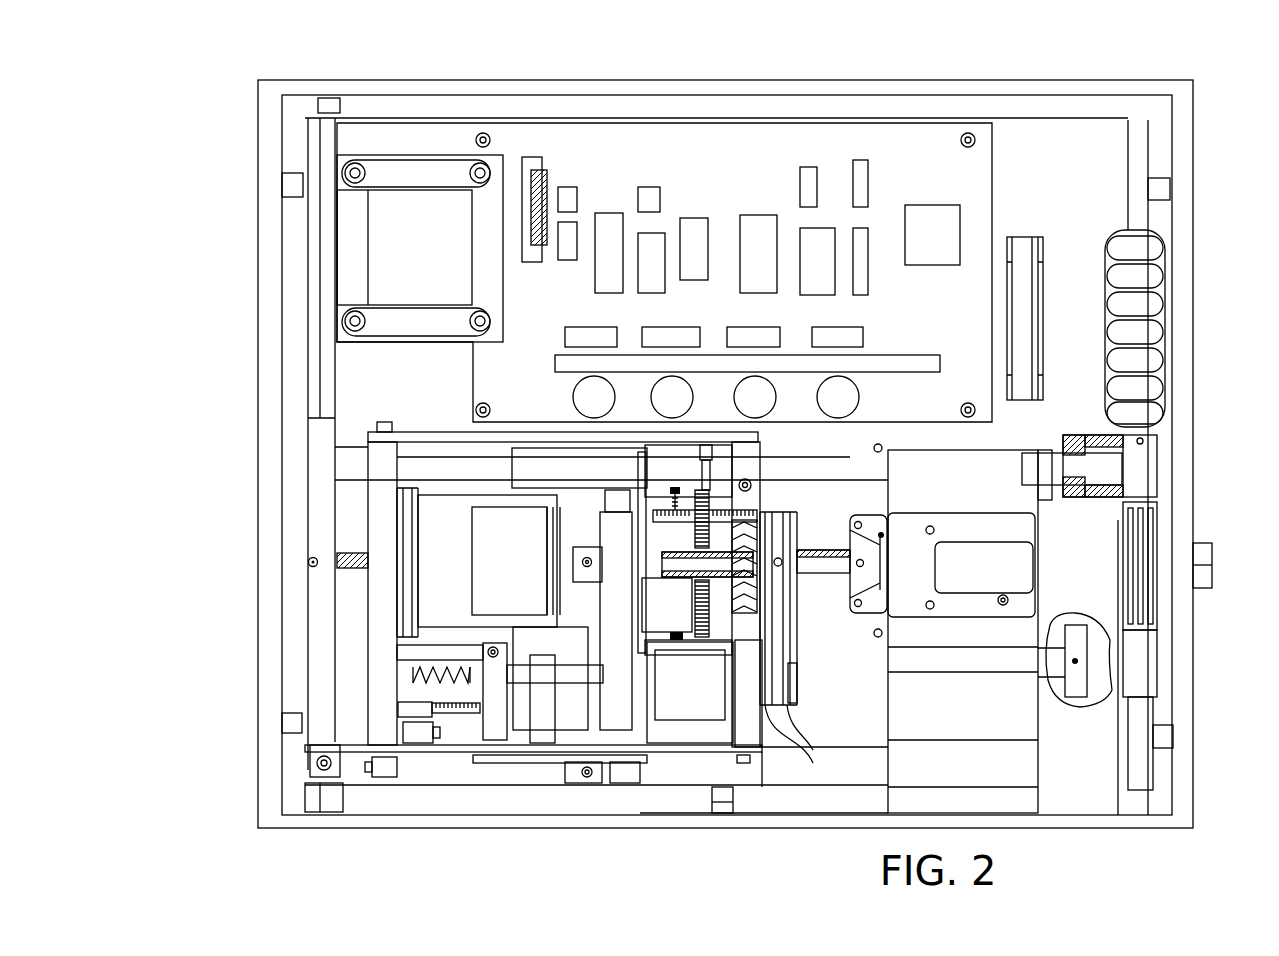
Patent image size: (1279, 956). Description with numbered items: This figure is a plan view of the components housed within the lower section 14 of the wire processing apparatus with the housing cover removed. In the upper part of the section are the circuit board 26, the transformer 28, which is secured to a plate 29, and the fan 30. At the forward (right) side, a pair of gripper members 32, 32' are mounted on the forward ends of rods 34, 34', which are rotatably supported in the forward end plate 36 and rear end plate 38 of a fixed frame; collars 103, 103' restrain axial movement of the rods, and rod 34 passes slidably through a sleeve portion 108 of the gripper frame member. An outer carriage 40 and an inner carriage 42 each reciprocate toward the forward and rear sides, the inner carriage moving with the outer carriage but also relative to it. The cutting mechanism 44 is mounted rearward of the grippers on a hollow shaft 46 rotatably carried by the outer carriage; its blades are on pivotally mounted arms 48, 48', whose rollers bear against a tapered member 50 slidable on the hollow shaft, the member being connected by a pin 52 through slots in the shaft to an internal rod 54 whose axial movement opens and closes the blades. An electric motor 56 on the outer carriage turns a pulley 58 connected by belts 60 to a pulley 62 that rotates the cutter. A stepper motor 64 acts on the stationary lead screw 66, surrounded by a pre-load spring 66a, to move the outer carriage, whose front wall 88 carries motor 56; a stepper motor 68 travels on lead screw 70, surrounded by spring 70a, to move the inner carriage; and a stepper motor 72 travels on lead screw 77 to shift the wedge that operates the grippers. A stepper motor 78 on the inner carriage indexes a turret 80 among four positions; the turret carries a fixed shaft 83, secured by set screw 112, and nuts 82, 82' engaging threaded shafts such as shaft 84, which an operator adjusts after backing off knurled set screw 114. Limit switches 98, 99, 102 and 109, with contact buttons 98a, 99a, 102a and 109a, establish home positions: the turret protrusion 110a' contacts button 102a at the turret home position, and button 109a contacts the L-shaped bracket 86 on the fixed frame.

The lower section 14 is at (778, 80).
The circuit board 26 is at (848, 135).
The transformer 28 is at (397, 207).
The plate 29 is at (298, 262).
The fan 30 is at (1030, 300).
The gripper member 32 is at (1184, 467).
The gripper member 32' is at (1192, 566).
The rod 34 is at (987, 599).
The rod 34' is at (963, 717).
The forward end plate 36 is at (1103, 440).
The rear end plate 38 is at (315, 608).
The outer carriage 40 is at (399, 424).
The inner carriage 42 is at (574, 532).
The cutting mechanism 44 is at (1007, 463).
The hollow shaft 46 is at (810, 547).
The arm 48 is at (902, 493).
The arm 48' is at (900, 623).
The member 50 is at (905, 562).
The pin 52 is at (860, 566).
The rod 54 is at (832, 565).
The electric motor 56 is at (713, 712).
The pulley 58 is at (797, 683).
The belts 60 is at (795, 745).
The pulley 62 is at (795, 515).
The stepper motor 64 is at (430, 583).
The lead screw 66 is at (350, 555).
The spring 66a is at (313, 562).
The stepper motor 68 is at (507, 723).
The lead screw 70 is at (413, 687).
The spring 70a is at (448, 663).
The stepper motor 72 is at (587, 733).
The lead screw 77 is at (470, 713).
The stepper motor 78 is at (488, 518).
The turret 80 is at (630, 605).
The nut 82 is at (695, 466).
The nut 82' is at (690, 661).
The fixed shaft 83 is at (692, 563).
The threaded shaft 84 is at (747, 512).
The L-shaped bracket 86 is at (593, 783).
The front wall 88 is at (750, 727).
The limit switch 98 is at (415, 733).
The contact button 98a is at (440, 733).
The limit switch 99 is at (390, 777).
The contact button 99a is at (363, 765).
The limit switch 102 is at (618, 498).
The contact button 102a is at (642, 505).
The collar 103 is at (1110, 498).
The collar 103' is at (1075, 693).
The sleeve portion 108 is at (558, 458).
The limit switch 109 is at (640, 792).
The contact button 109a is at (630, 775).
The protrusion 110a' is at (705, 403).
The set screw 112 is at (598, 520).
The set screw 114 is at (735, 500).